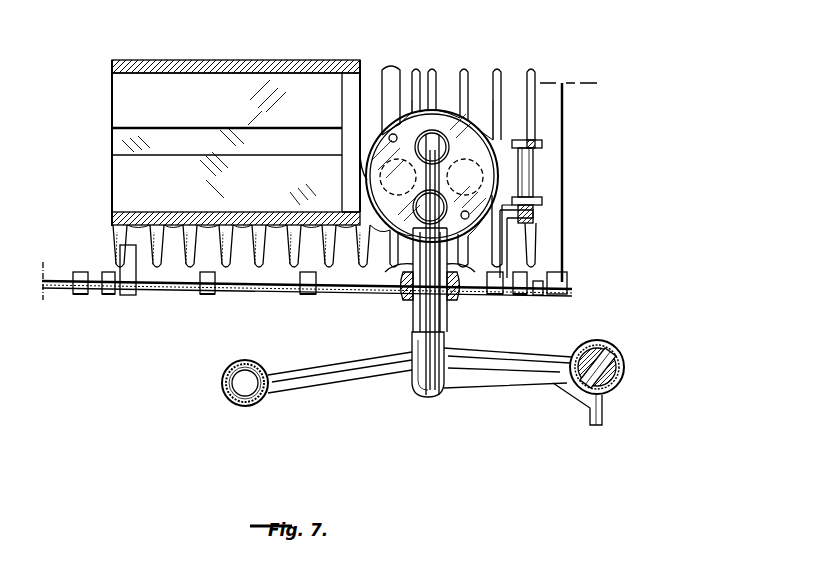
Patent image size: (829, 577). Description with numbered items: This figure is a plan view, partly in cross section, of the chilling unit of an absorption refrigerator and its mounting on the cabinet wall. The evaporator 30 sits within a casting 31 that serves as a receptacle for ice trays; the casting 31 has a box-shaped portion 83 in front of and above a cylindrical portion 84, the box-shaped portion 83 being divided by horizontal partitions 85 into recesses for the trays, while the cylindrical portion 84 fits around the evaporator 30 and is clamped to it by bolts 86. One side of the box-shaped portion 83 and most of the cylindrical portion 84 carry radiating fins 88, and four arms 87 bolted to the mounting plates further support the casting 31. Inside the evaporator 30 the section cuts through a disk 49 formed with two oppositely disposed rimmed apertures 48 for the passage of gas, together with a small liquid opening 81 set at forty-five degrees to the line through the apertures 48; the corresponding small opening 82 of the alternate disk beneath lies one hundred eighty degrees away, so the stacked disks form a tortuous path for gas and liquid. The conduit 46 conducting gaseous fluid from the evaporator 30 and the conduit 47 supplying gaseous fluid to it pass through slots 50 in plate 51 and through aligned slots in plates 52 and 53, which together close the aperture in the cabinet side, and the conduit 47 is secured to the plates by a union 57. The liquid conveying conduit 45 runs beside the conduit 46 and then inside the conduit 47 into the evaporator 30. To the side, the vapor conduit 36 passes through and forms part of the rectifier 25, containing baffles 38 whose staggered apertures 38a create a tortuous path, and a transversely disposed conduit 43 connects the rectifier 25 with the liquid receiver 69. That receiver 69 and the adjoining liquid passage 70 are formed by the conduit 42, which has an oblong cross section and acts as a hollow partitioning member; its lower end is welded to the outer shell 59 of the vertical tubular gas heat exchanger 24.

The vertical tubular gas heat exchanger 24 is at (622, 352).
The rectifier 25 is at (225, 378).
The evaporator 30 is at (367, 158).
The casting 31 is at (214, 61).
The vapor conduit 36 is at (247, 397).
The baffles 38 is at (245, 368).
The apertures 38a is at (262, 395).
The conduit 42 is at (608, 349).
The transversely disposed conduit 43 is at (330, 360).
The liquid conveying conduit 45 is at (424, 318).
The conduit 46 is at (448, 346).
The conduit 47 is at (417, 384).
The apertures 48 is at (440, 152).
The disk 49 is at (473, 147).
The slots 50 is at (400, 290).
The plate 51 is at (153, 286).
The plate 52 is at (537, 298).
The plate 53 is at (412, 306).
The union 57 is at (400, 285).
The outer shell 59 is at (626, 367).
The liquid receiver 69 is at (589, 345).
The liquid passage 70 is at (616, 380).
The opening 81 is at (393, 134).
The opening 82 is at (470, 218).
The box-shaped portion 83 is at (113, 61).
The cylindrical portion 84 is at (410, 108).
The partitions 85 is at (122, 100).
The bolts 86 is at (536, 180).
The arms 87 is at (118, 268).
The radiating fins 88 is at (498, 100).